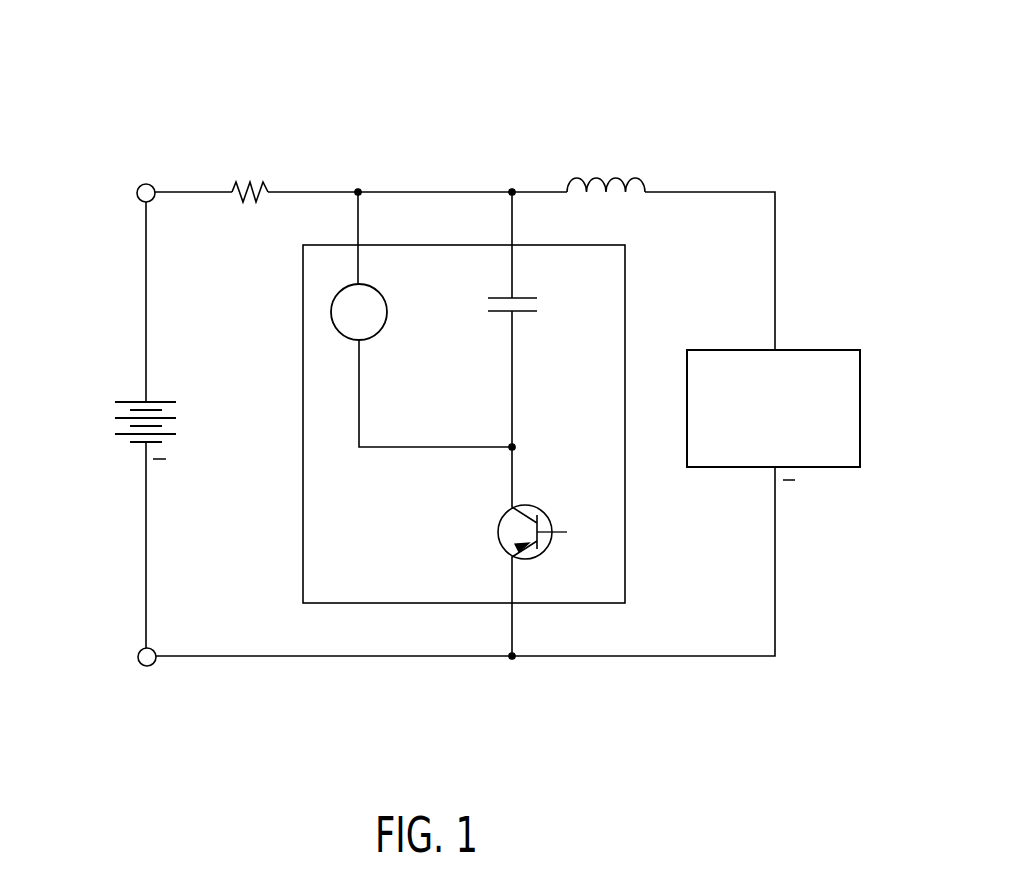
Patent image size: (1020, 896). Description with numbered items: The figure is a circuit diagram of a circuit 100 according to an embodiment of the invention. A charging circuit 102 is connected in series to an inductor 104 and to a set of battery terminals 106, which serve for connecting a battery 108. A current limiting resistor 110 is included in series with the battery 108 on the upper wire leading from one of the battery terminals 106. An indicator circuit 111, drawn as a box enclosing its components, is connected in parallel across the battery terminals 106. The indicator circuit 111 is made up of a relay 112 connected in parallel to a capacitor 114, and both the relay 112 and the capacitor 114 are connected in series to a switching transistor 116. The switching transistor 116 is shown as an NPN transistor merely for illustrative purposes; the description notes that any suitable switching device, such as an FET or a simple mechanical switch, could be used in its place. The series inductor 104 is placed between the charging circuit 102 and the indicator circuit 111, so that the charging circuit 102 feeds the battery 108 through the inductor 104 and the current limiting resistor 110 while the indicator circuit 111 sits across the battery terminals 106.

The circuit 100 is at (345, 112).
The charging circuit 102 is at (818, 350).
The inductor 104 is at (625, 176).
The battery terminals 106 is at (138, 186).
The battery 108 is at (178, 424).
The current limiting resistor 110 is at (249, 204).
The indicator circuit 111 is at (626, 530).
The relay 112 is at (376, 337).
The capacitor 114 is at (500, 296).
The switching transistor 116 is at (525, 505).